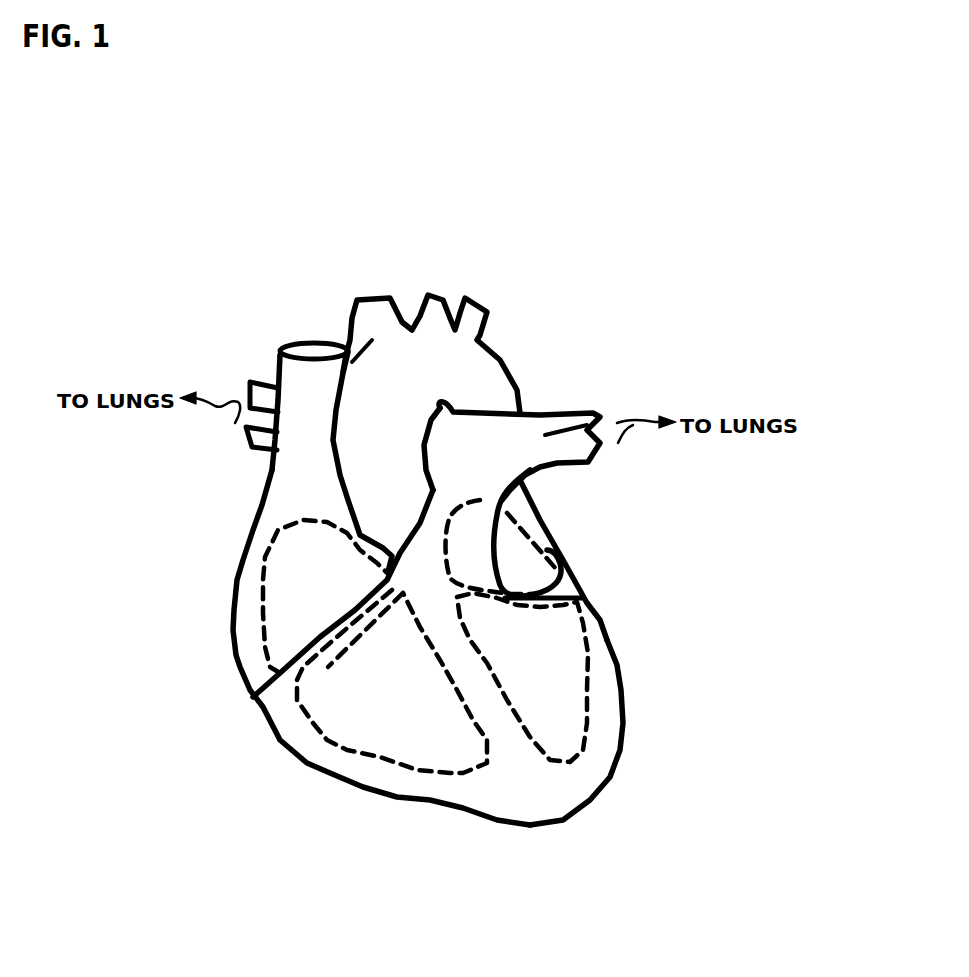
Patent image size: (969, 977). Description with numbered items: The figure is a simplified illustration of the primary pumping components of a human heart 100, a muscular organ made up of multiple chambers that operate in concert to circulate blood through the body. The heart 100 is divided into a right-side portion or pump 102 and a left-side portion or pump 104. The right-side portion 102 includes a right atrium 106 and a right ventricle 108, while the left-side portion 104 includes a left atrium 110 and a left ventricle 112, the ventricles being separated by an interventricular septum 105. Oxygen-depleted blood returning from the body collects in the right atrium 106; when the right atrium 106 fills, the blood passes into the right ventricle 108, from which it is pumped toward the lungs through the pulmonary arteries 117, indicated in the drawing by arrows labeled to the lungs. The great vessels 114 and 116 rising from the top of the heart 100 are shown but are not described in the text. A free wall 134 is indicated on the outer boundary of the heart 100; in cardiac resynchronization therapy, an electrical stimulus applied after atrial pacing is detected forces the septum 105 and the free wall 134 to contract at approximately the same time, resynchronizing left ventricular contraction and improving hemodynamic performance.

The heart 100 is at (241, 319).
The right-side portion or pump 102 is at (205, 667).
The left-side portion or pump 104 is at (626, 609).
The interventricular septum 105 is at (470, 675).
The right atrium 106 is at (263, 590).
The right ventricle 108 is at (327, 737).
The left atrium 110 is at (547, 550).
The left ventricle 112 is at (615, 752).
The aorta 114 is at (460, 371).
The superior vena cava 116 is at (308, 412).
The pulmonary arteries 117 is at (250, 437).
The free wall 134 is at (612, 708).